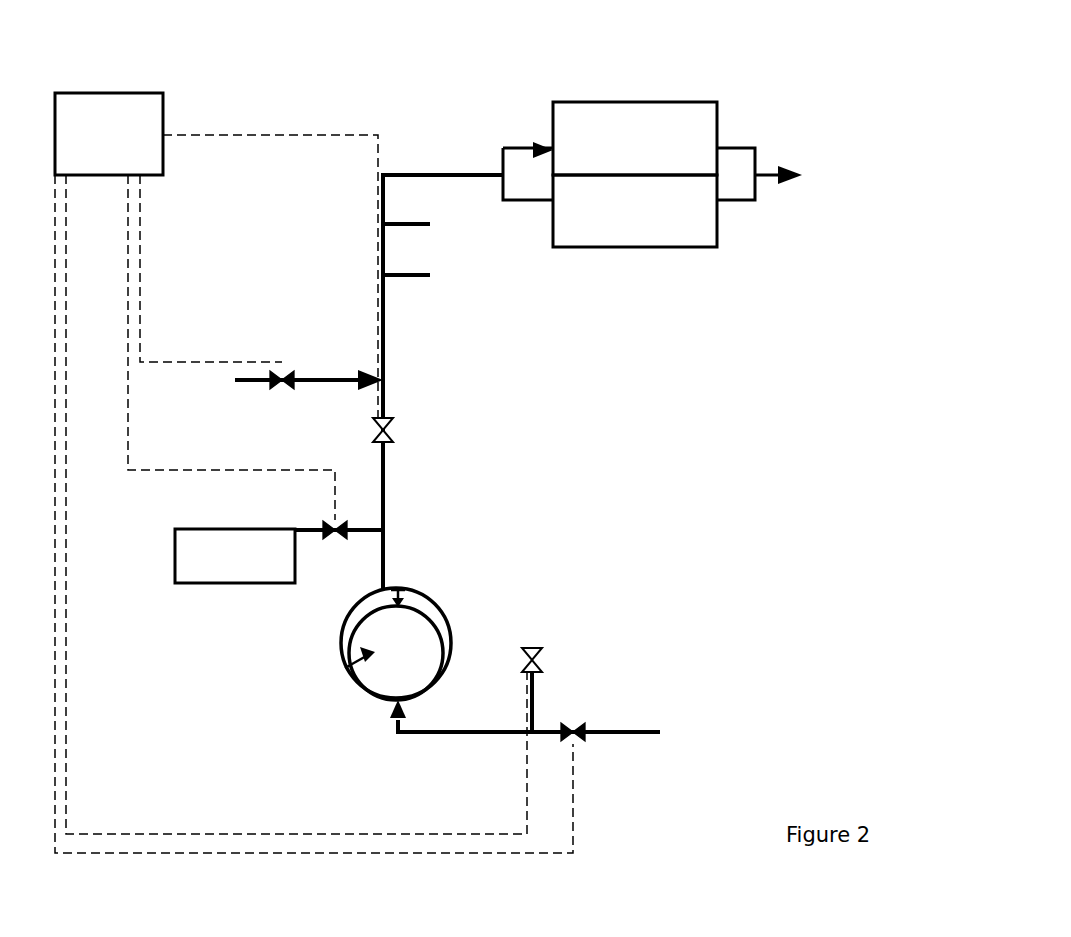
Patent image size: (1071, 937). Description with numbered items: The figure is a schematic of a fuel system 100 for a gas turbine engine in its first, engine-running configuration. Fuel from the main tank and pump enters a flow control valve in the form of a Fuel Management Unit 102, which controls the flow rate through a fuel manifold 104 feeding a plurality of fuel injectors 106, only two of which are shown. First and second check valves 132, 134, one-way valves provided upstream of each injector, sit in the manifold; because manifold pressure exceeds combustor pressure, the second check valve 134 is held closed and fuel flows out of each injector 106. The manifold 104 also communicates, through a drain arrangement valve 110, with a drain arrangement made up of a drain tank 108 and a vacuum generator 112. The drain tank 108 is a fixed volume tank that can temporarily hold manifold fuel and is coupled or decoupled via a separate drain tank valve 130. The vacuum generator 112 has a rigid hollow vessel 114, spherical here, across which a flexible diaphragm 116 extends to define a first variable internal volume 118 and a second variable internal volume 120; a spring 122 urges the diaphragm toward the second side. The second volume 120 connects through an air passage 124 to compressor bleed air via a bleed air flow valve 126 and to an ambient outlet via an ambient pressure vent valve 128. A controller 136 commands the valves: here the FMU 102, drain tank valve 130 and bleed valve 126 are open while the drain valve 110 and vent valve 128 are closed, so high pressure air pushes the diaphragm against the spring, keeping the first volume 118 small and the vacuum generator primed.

The fuel system 100 is at (650, 403).
The Fuel Management Unit 102 is at (275, 387).
The fuel manifold 104 is at (380, 378).
The fuel injectors 106 is at (430, 224).
The drain tank 108 is at (175, 538).
The drain arrangement valve 110 is at (395, 423).
The vacuum generator 112 is at (400, 637).
The rigid hollow vessel 114 is at (374, 700).
The flexible diaphragm 116 is at (345, 625).
The first variable internal volume 118 is at (418, 604).
The second variable internal volume 120 is at (415, 668).
The spring 122 is at (405, 588).
The air passage 124 is at (437, 735).
The bleed air flow valve 126 is at (578, 742).
The ambient pressure vent valve 128 is at (540, 656).
The drain tank valve 130 is at (342, 520).
The first check valve 132 is at (628, 102).
The second check valve 134 is at (651, 247).
The controller 136 is at (138, 93).